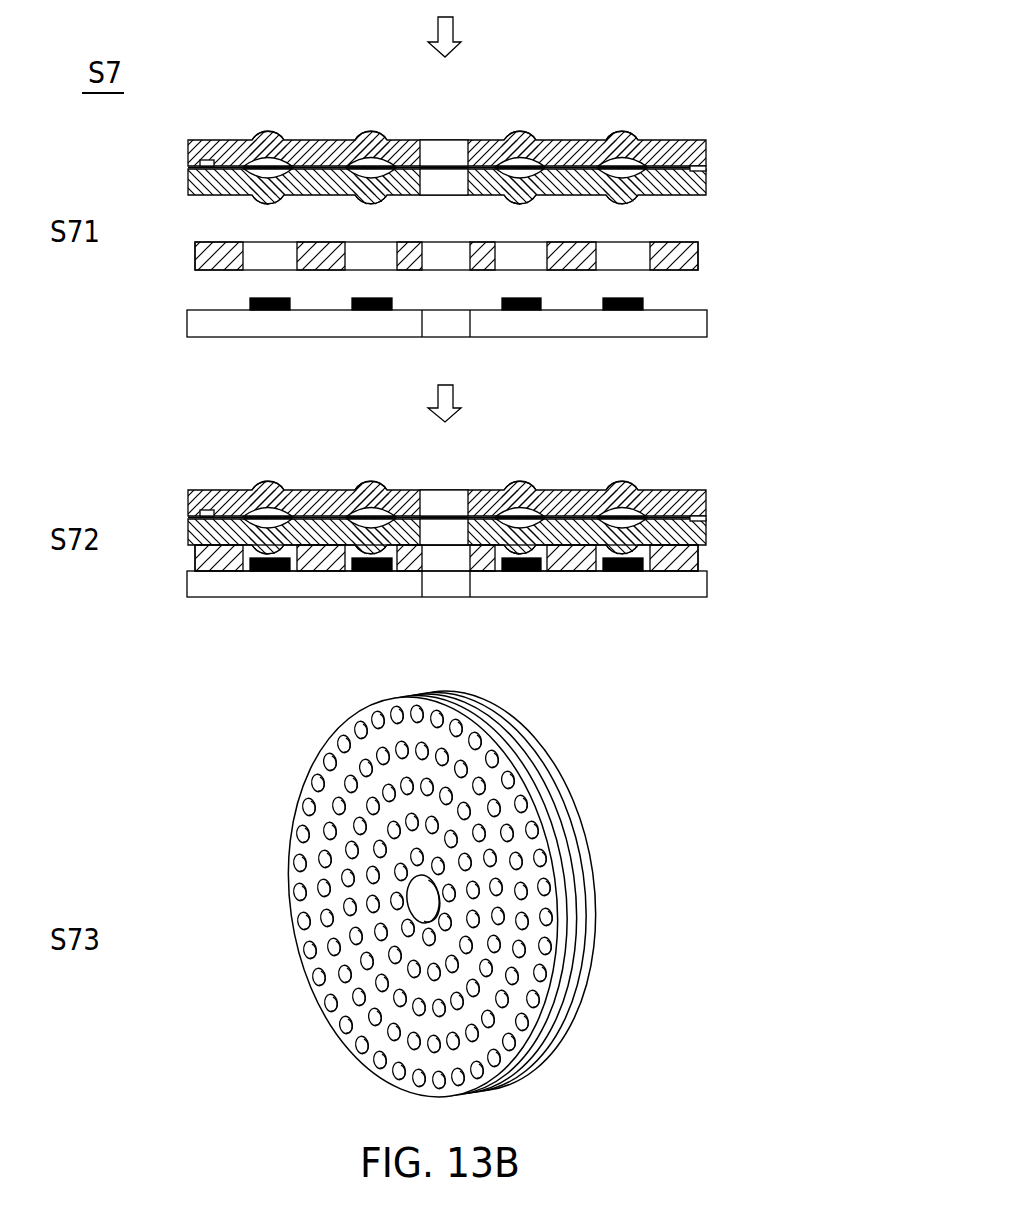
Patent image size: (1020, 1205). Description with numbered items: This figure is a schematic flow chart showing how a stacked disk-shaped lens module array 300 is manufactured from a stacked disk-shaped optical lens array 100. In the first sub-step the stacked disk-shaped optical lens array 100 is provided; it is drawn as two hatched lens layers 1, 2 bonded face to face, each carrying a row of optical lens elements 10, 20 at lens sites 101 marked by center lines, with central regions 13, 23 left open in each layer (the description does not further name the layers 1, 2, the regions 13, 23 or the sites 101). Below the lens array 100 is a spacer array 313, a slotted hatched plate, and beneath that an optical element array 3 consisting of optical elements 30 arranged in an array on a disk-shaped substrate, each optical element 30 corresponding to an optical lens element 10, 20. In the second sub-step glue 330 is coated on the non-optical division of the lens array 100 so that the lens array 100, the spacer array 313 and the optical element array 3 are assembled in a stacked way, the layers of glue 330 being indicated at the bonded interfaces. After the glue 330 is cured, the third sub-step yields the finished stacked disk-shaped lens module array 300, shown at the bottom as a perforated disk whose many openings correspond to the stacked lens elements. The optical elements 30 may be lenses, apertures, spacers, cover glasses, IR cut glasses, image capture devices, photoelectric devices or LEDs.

The first plate 1 is at (707, 143).
The second plate 2 is at (707, 182).
The optical element array 3 is at (697, 325).
The optical lens element 10 is at (536, 134).
The first central opening 13 is at (449, 152).
The optical lens element 20 is at (528, 202).
The second central opening 23 is at (446, 186).
The optical element 30 is at (645, 301).
The stacked disk-shaped optical lens array 100 is at (672, 128).
The through holes 101 is at (622, 610).
The stacked disk-shaped lens module array 300 is at (778, 123).
The spacer array 313 is at (698, 253).
The glue 330 is at (190, 519).